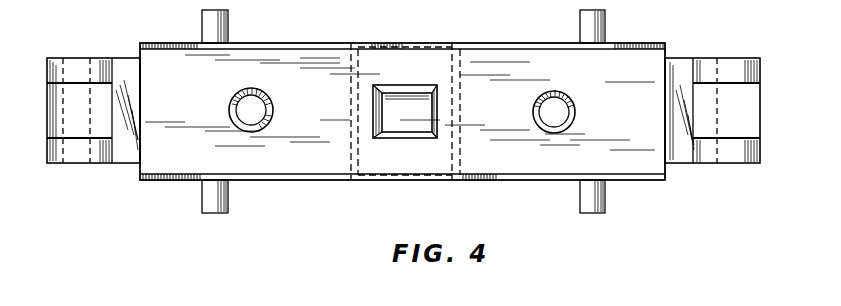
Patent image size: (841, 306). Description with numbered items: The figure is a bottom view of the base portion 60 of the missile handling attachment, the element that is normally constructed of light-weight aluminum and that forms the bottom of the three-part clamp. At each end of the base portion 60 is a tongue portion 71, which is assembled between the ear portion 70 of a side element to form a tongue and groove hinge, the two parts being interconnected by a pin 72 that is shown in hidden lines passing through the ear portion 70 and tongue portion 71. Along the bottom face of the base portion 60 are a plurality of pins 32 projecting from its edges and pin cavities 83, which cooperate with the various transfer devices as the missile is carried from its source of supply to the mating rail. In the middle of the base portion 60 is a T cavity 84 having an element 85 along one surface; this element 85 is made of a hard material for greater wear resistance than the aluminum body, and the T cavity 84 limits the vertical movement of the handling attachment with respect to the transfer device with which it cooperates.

The pins 32 is at (206, 20).
The base portion 60 is at (332, 187).
The ear portion 70 is at (47, 69).
The tongue portion 71 is at (47, 108).
The pin 72 is at (68, 66).
The pin cavities 83 is at (271, 108).
The T cavity 84 is at (405, 117).
The element 85 is at (405, 111).